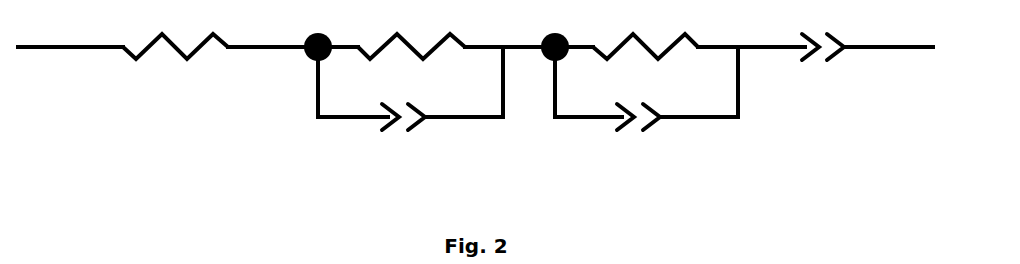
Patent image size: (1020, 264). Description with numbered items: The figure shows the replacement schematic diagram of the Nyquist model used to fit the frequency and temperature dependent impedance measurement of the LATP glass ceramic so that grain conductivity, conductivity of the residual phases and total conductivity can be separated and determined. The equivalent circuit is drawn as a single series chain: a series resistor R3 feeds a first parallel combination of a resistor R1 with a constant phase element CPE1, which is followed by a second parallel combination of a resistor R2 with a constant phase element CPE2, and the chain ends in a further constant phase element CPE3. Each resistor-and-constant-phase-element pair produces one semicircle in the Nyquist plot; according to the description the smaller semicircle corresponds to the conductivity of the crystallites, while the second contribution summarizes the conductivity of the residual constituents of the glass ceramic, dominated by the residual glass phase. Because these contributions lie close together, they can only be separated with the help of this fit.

The resistor R3 (series / solution resistance) R3 is at (175, 31).
The resistor R1 is at (411, 31).
The resistor R2 is at (645, 31).
The constant phase element CPE1 is at (409, 102).
The constant phase element CPE2 is at (644, 102).
The constant phase element CPE3 is at (830, 32).